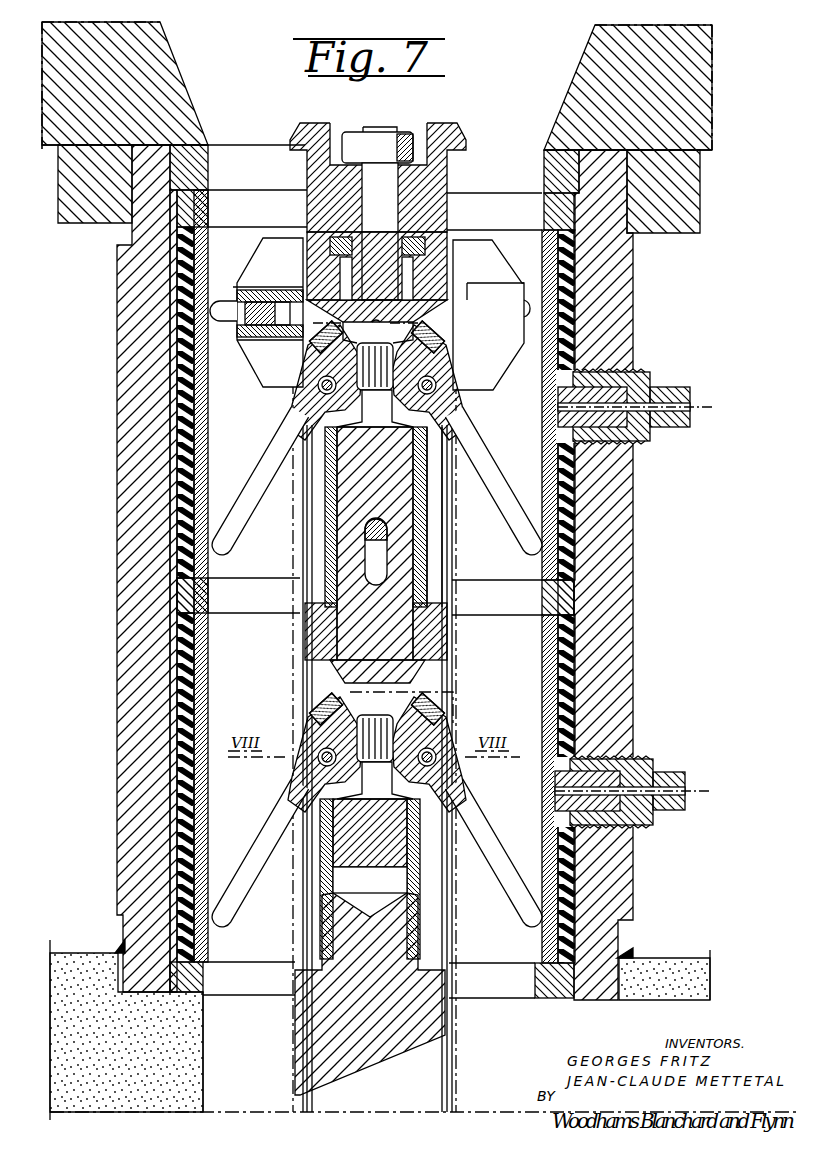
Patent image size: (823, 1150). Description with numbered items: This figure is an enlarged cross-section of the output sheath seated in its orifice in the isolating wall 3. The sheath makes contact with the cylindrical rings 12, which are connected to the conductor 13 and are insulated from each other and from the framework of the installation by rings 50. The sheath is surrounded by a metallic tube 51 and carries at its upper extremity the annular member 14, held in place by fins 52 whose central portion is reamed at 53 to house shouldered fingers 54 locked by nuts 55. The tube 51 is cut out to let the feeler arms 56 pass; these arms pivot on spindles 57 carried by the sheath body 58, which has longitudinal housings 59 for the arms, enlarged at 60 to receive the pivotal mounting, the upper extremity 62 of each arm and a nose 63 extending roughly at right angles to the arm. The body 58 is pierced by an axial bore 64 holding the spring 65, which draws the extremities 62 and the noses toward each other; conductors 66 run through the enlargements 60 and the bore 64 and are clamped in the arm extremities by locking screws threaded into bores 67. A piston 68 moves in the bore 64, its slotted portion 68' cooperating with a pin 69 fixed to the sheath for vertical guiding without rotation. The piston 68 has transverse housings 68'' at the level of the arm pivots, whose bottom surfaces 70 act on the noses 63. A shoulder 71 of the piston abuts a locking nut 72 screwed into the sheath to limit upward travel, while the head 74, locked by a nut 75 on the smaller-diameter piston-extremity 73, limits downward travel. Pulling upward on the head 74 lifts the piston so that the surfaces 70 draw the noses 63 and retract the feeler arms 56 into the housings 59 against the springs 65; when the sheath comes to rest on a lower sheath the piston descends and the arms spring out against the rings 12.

The isolating wall 3 is at (98, 978).
The cylindrical rings 12 is at (548, 517).
The conductors 13 is at (700, 408).
The annular member 14 is at (207, 334).
The insulating rings 50 is at (575, 610).
The metallic tube 51 is at (447, 535).
The fins 52 is at (480, 252).
The reamed central portion 53 is at (233, 286).
The shouldered fingers 54 is at (222, 310).
The nuts 55 is at (218, 345).
The feeler arms 56 is at (263, 465).
The spindles 57 is at (290, 390).
The sheath body 58 is at (427, 643).
The housings 59 is at (317, 523).
The enlargements 60 is at (317, 342).
The upper extremity 62 is at (348, 343).
The nose 63 is at (312, 403).
The axial bore 64 is at (353, 877).
The spring 65 is at (390, 368).
The conductors 66 is at (297, 633).
The bores 67 is at (432, 334).
The piston 68 is at (343, 555).
The slotted portion 68' is at (455, 517).
The transverse housings 68'' is at (385, 594).
The pin 69 is at (367, 540).
The bottom surfaces 70 is at (368, 428).
The shoulder 71 is at (347, 268).
The locking nut 72 is at (418, 240).
The piston-extremity 73 is at (373, 200).
The head 74 is at (296, 129).
The nut 75 is at (355, 140).